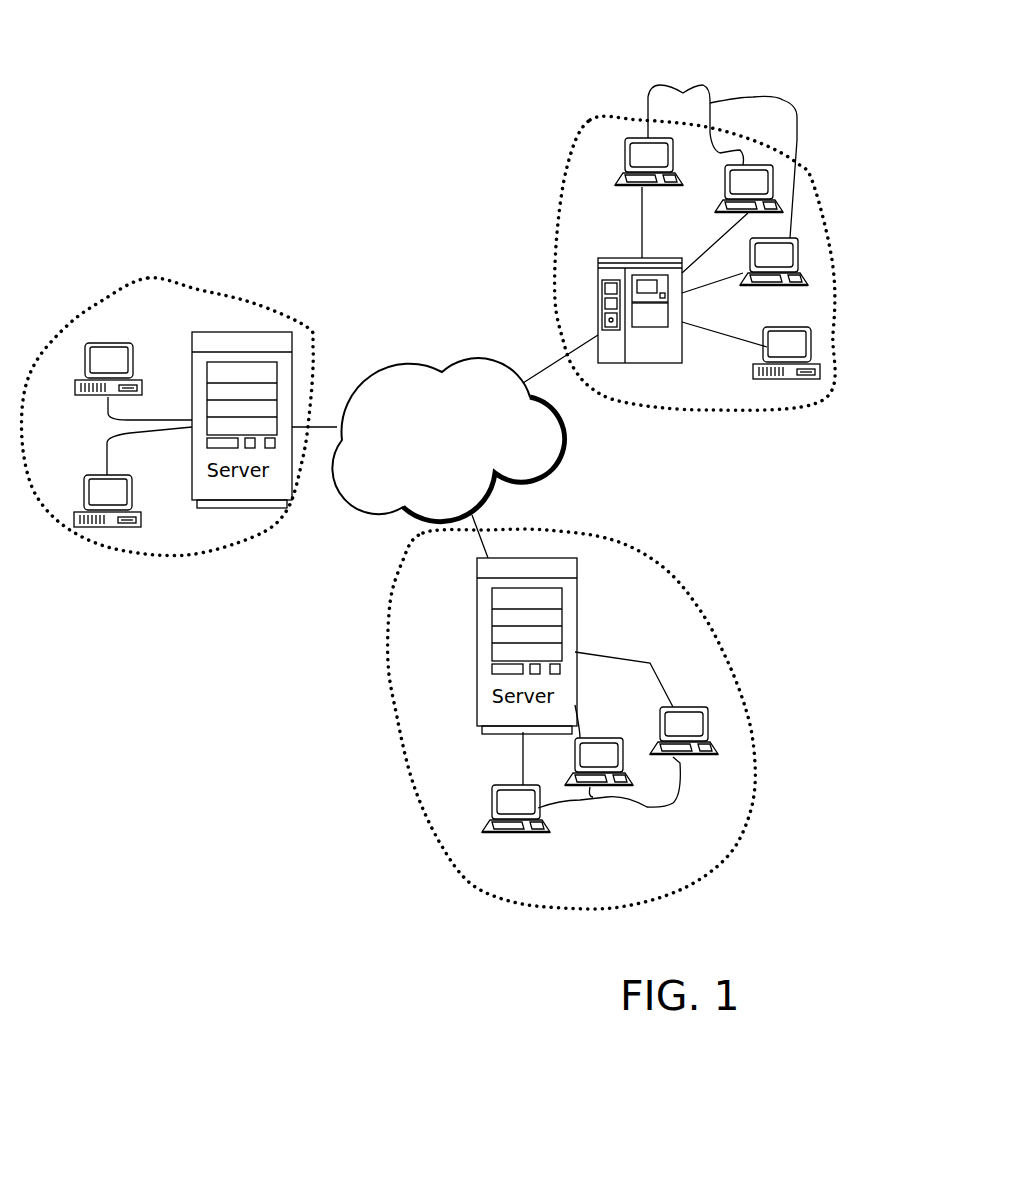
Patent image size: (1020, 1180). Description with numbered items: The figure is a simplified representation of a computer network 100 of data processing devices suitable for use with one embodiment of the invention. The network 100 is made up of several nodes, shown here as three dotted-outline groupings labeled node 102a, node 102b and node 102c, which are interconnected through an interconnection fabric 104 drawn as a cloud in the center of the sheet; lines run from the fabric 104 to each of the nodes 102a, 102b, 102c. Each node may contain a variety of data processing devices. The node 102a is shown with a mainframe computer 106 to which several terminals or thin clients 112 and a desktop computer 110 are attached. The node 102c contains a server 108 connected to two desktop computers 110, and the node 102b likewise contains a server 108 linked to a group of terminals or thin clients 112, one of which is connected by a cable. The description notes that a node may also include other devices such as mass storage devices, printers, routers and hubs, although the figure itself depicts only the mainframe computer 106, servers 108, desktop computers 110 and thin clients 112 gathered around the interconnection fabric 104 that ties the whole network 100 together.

The computer network 100 is at (363, 183).
The node 102a is at (677, 393).
The node 102b is at (653, 602).
The node 102c is at (213, 535).
The interconnection fabric 104 is at (422, 457).
The mainframe computer 106 is at (598, 308).
The server 108 is at (225, 333).
The desktop computer 110 is at (117, 343).
The terminals or thin clients 112 is at (697, 83).